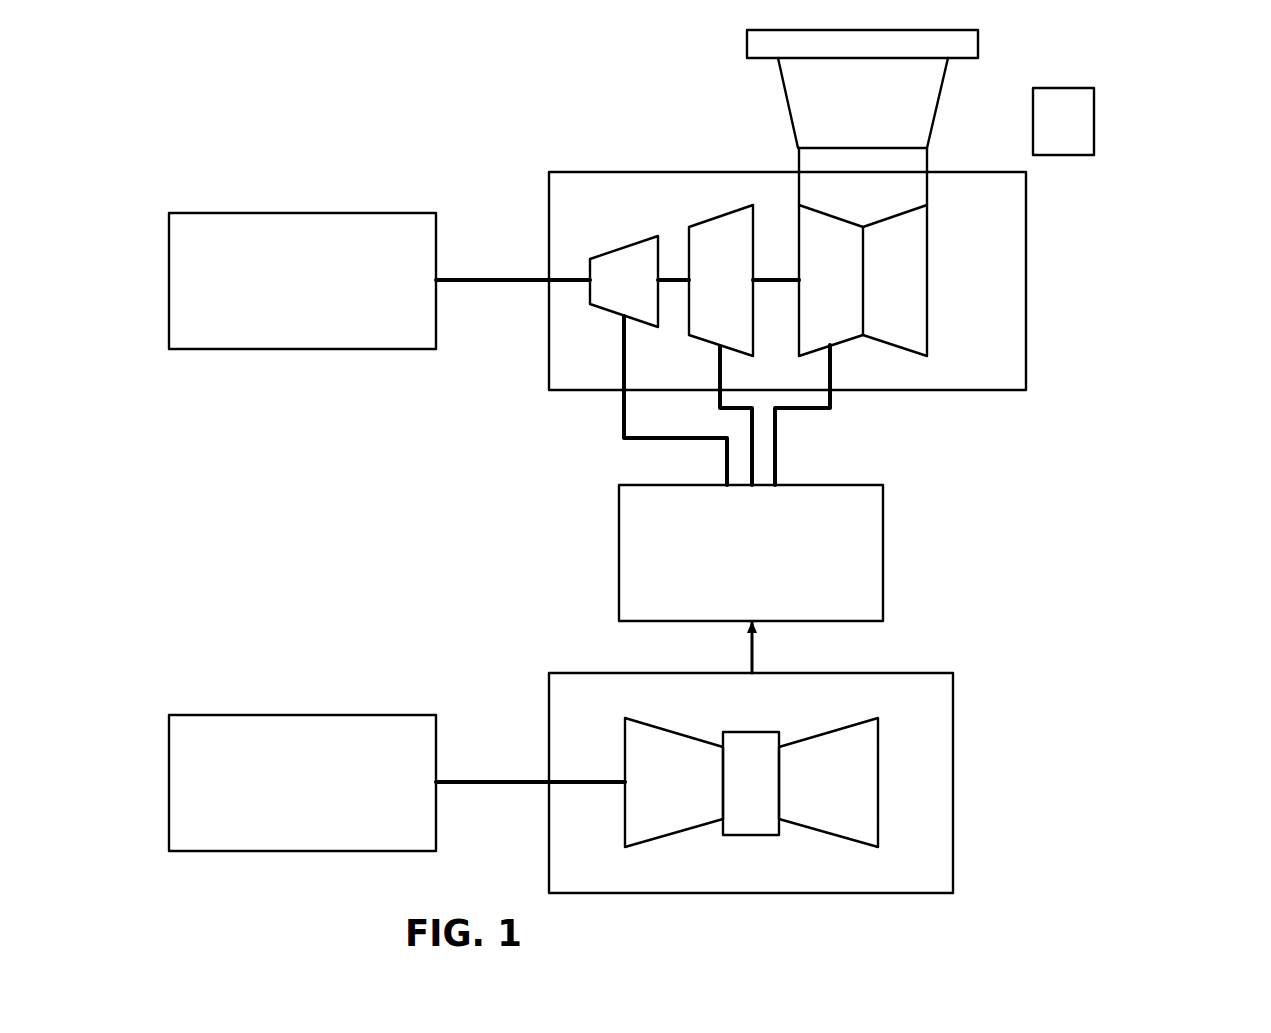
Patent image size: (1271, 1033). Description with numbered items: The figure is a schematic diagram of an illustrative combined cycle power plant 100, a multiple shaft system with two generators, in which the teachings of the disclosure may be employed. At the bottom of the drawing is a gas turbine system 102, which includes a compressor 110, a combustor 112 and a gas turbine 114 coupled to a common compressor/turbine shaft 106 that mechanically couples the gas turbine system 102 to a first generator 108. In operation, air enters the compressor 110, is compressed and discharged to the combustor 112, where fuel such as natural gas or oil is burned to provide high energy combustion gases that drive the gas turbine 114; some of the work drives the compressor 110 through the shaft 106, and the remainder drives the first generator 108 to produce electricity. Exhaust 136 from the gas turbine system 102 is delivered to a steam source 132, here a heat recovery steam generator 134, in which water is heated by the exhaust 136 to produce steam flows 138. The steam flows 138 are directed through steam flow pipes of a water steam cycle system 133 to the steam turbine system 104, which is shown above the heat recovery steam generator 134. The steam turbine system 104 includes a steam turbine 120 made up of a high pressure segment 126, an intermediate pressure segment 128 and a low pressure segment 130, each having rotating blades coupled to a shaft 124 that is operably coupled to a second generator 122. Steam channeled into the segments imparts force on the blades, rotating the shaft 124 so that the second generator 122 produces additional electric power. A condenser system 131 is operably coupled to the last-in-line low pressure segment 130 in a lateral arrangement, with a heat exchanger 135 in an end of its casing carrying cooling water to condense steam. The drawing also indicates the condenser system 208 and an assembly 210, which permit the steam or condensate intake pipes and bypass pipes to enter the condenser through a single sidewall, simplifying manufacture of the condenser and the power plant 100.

The power plant 100 is at (1190, 231).
The gas turbine system 102 is at (940, 718).
The steam turbine system 104 is at (999, 218).
The shaft 106 is at (487, 785).
The first generator 108 is at (282, 811).
The compressor 110 is at (675, 836).
The combustor 112 is at (750, 836).
The gas turbine 114 is at (835, 836).
The steam turbine 120 is at (942, 200).
The generator 122 is at (282, 309).
The shaft 124 is at (495, 279).
The high pressure segment 126 is at (603, 295).
The intermediate pressure segment 128 is at (700, 295).
The low pressure segment 130 is at (842, 295).
The condenser system 131 is at (942, 96).
The steam source 132 is at (898, 528).
The water steam cycle system 133 is at (585, 463).
The heat recovery steam generator 134 is at (730, 584).
The heat exchanger 135 is at (967, 46).
The exhaust 136 is at (751, 659).
The steam flow 138 is at (727, 473).
The condenser system 208 is at (772, 100).
The assembly 210 is at (1100, 104).